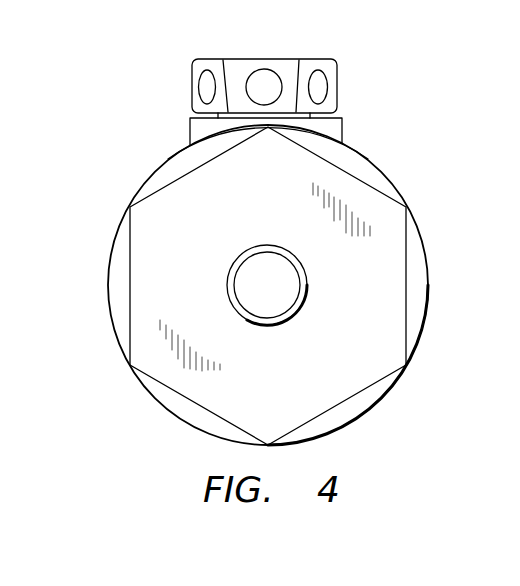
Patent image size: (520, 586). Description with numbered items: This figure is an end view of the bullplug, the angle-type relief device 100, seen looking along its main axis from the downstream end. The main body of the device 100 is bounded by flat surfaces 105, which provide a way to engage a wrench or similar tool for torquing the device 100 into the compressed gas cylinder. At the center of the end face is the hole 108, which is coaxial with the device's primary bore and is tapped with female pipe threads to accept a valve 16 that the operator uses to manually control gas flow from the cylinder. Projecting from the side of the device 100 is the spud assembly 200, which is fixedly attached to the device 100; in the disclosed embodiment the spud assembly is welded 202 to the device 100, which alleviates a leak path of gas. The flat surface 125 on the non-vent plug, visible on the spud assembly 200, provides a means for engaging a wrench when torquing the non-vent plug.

The spud assembly 200 is at (300, 57).
The flat surface 125 is at (330, 92).
The weld 202 is at (187, 143).
The angle-type relief device 100 is at (153, 175).
The valve 16 is at (130, 205).
The hole 108 is at (307, 290).
The flat surfaces 105 is at (410, 283).